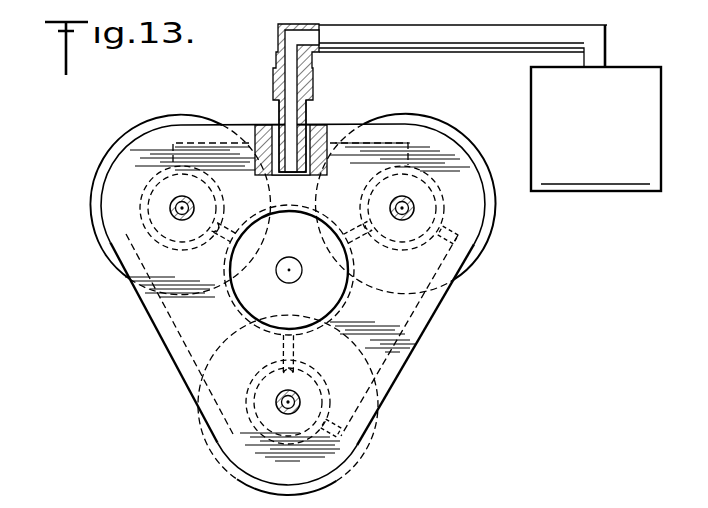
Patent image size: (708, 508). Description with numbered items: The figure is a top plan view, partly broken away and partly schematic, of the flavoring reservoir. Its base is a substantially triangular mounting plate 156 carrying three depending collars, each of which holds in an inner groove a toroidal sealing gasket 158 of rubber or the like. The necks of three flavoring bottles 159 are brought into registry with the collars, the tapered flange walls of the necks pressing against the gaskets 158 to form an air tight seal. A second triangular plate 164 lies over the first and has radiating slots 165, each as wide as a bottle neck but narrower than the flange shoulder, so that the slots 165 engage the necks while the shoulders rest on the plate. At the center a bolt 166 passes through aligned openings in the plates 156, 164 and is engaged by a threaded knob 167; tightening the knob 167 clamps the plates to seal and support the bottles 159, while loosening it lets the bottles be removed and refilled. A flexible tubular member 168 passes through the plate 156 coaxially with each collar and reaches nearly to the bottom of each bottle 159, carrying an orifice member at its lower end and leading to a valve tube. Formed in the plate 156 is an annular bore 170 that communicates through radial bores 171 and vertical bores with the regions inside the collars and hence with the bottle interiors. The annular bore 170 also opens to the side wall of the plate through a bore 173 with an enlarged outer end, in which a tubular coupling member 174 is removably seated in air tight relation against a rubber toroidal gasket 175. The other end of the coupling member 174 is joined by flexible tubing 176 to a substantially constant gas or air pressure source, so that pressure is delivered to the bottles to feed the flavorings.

The mounting plate 156 is at (170, 304).
The toroidal sealing gasket 158 is at (173, 252).
The bottle 159 is at (96, 175).
The second triangular plate 164 is at (421, 345).
The radiating slot 165 is at (476, 254).
The bolt 166 is at (294, 263).
The threaded knob 167 is at (323, 240).
The tubular member 168 is at (170, 205).
The annular bore 170 is at (385, 282).
The radial bore 171 is at (224, 210).
The bore 173 is at (321, 133).
The tubular coupling member 174 is at (272, 110).
The toroidal gasket 175 is at (263, 137).
The flexible tubing 176 is at (393, 44).